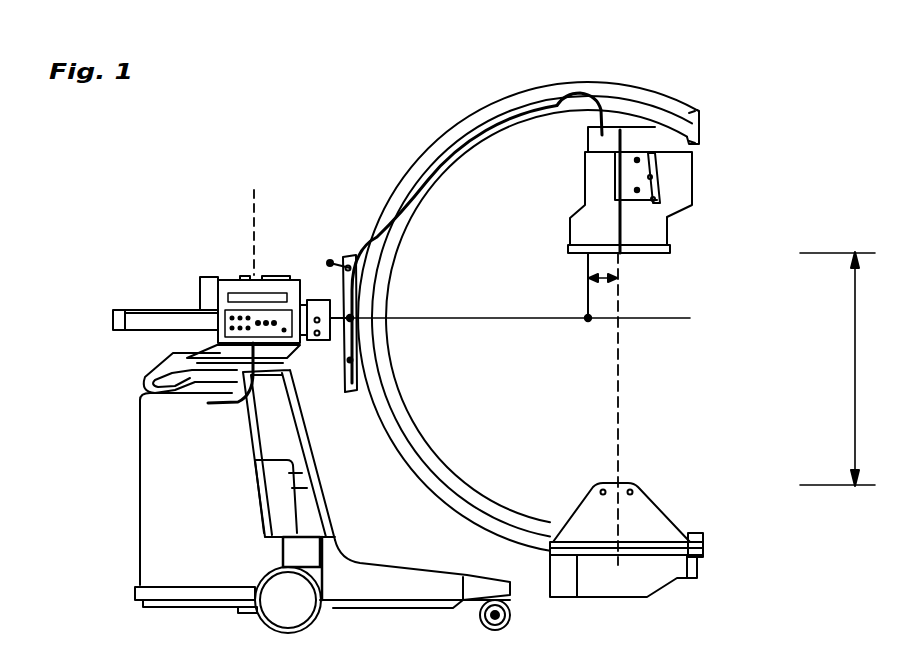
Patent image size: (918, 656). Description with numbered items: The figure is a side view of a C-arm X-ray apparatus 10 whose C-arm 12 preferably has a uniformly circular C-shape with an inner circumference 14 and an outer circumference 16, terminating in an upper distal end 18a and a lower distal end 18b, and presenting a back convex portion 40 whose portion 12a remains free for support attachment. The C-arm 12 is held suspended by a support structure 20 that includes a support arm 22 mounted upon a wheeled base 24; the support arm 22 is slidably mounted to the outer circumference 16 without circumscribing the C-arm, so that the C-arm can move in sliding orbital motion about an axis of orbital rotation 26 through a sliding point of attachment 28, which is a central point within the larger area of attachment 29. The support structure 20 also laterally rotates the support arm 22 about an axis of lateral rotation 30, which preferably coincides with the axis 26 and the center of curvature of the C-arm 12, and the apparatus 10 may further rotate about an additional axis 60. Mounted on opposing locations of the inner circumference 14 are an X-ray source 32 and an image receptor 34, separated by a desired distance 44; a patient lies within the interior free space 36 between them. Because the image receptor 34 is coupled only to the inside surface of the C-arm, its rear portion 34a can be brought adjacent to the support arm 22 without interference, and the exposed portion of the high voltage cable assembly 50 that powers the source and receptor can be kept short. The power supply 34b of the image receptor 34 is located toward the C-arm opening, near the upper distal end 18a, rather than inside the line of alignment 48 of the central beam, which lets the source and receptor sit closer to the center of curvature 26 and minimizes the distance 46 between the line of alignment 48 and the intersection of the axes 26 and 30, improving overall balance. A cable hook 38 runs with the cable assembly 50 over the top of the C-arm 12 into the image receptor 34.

The C-arm X-ray apparatus 10 is at (237, 148).
The C-arm 12 is at (581, 317).
The portion of the C-arm 12a is at (697, 106).
The inner circumference 14 is at (444, 178).
The outer circumference 16 is at (437, 124).
The upper distal end 18a is at (705, 130).
The lower distal end 18b is at (705, 545).
The support structure 20 is at (263, 403).
The support arm 22 is at (318, 277).
The wheeled base 24 is at (137, 408).
The axis of orbital rotation 26 is at (588, 324).
The sliding point of attachment 28 is at (353, 318).
The area of attachment 29 is at (309, 247).
The axis of lateral rotation 30 is at (680, 317).
The X-ray source 32 is at (650, 522).
The image receptor 34 is at (648, 221).
The rear portion of the image receptor 34a is at (577, 124).
The power supply 34b is at (680, 181).
The interior free space 36 is at (505, 261).
The cable end 38 is at (640, 88).
The back convex portion 40 is at (612, 88).
The distance between X-ray source and image receptor 44 is at (855, 384).
The distance 46 is at (622, 276).
The line of alignment 48 is at (622, 298).
The high voltage cable assembly 50 is at (434, 185).
The axis 60 is at (253, 217).